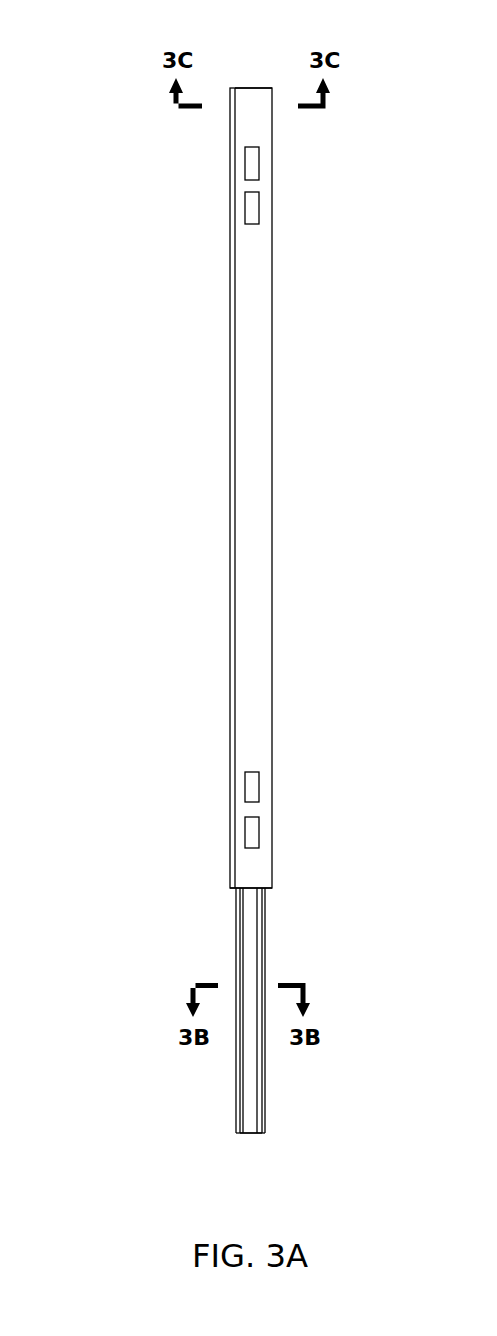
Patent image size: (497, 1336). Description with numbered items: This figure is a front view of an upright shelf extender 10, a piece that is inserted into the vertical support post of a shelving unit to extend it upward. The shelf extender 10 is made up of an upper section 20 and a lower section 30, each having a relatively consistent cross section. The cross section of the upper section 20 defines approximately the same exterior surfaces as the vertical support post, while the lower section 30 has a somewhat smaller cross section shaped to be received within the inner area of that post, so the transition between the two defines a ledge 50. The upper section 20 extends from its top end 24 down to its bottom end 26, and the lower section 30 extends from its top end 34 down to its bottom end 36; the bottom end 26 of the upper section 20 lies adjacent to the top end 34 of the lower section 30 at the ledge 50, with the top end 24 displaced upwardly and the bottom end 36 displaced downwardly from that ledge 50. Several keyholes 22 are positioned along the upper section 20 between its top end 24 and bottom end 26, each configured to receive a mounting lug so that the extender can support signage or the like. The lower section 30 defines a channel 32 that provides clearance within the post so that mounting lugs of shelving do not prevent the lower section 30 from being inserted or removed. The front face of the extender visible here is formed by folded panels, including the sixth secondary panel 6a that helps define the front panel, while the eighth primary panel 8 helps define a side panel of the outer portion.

The shelf extender 10 is at (139, 489).
The eighth primary panel 8 is at (230, 554).
The sixth secondary panel 6a is at (261, 463).
The upper section 20 is at (274, 262).
The keyhole 22 is at (259, 163).
The top end of upper section 24 is at (253, 88).
The bottom end of upper section 26 is at (252, 892).
The lower section 30 is at (266, 1090).
The channel 32 is at (252, 1057).
The top end of lower section 34 is at (247, 887).
The bottom end of lower section 36 is at (252, 1133).
The ledge 50 is at (230, 888).